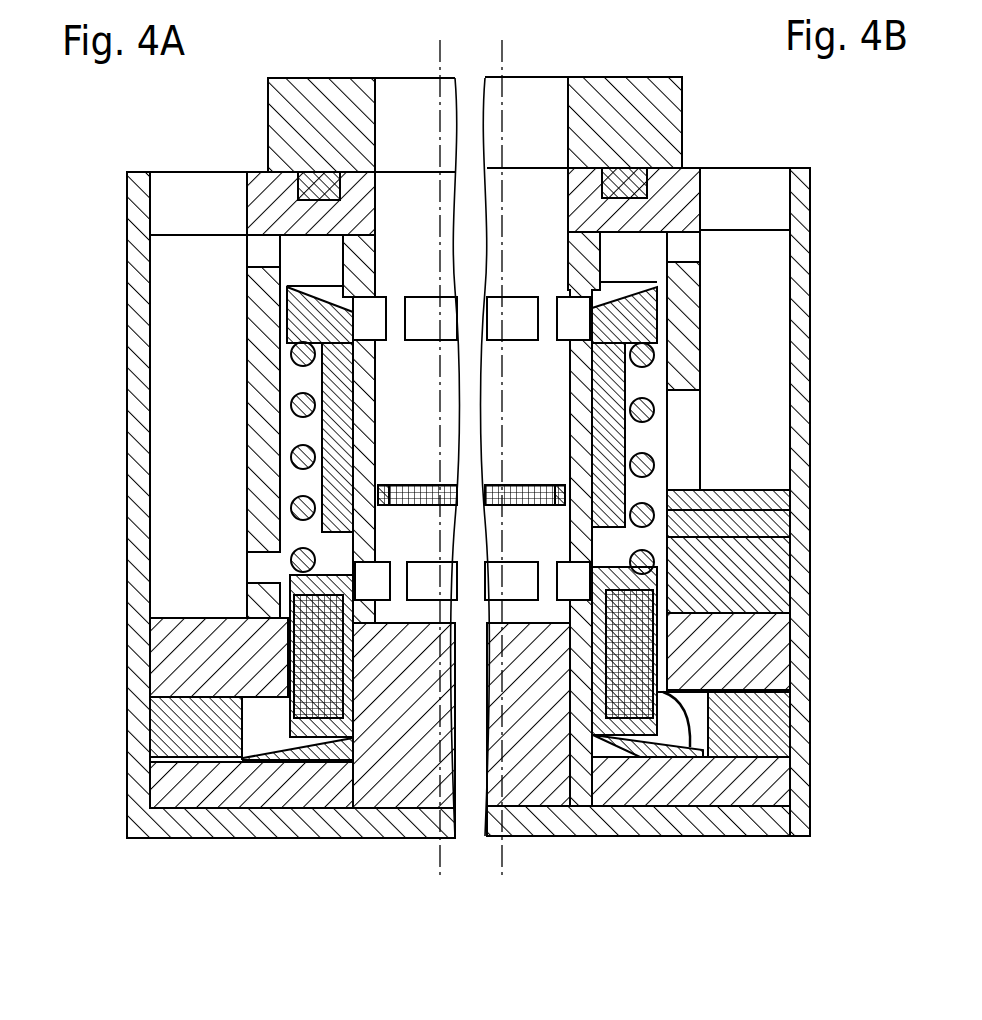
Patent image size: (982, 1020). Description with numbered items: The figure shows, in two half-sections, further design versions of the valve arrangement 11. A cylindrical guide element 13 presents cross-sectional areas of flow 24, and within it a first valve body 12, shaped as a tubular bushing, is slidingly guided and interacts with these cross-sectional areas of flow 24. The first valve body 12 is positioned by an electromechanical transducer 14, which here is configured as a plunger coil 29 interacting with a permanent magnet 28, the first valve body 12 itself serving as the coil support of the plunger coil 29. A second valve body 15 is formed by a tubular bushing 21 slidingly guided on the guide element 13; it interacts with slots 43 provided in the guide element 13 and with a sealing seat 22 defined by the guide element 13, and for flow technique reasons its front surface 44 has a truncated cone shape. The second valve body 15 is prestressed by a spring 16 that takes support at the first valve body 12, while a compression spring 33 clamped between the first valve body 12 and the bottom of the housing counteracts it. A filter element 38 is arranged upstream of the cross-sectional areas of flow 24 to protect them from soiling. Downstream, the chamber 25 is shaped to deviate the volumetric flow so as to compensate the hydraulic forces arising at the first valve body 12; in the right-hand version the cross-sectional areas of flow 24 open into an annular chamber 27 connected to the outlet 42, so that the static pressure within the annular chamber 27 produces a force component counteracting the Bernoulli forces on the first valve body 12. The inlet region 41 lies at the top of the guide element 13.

In FIG. 4A, the valve arrangement 11 is at (96, 182).
In FIG. 4B, the first valve body 12 is at (700, 750).
In FIG. 4A, the guide element 13 is at (353, 257).
In FIG. 4B, the electromechanical transducer 14 is at (713, 713).
In FIG. 4B, the second valve body 15 is at (650, 435).
In FIG. 4B, the spring 16 is at (667, 510).
In FIG. 4B, the tubular bushing 21 is at (628, 490).
In FIG. 4B, the sealing seat 22 is at (572, 300).
In FIG. 4A, the cross-sectional areas of flow 24 is at (512, 532).
In FIG. 4B, the cross-sectional areas of flow 24 is at (568, 572).
In FIG. 4B, the chamber 25 is at (640, 542).
In FIG. 4A, the annular chamber 27 is at (300, 481).
In FIG. 4B, the permanent magnet 28 is at (755, 663).
In FIG. 4A, the plunger coil 29 is at (284, 718).
In FIG. 4A, the compression spring 33 is at (333, 758).
In FIG. 4A, the filter element 38 is at (423, 488).
In FIG. 4B, the inlet bore 41 is at (537, 82).
In FIG. 4A, the outlet 42 is at (194, 196).
In FIG. 4B, the outlet 42 is at (767, 182).
In FIG. 4A, the slots 43 is at (553, 300).
In FIG. 4B, the front surface 44 is at (630, 283).